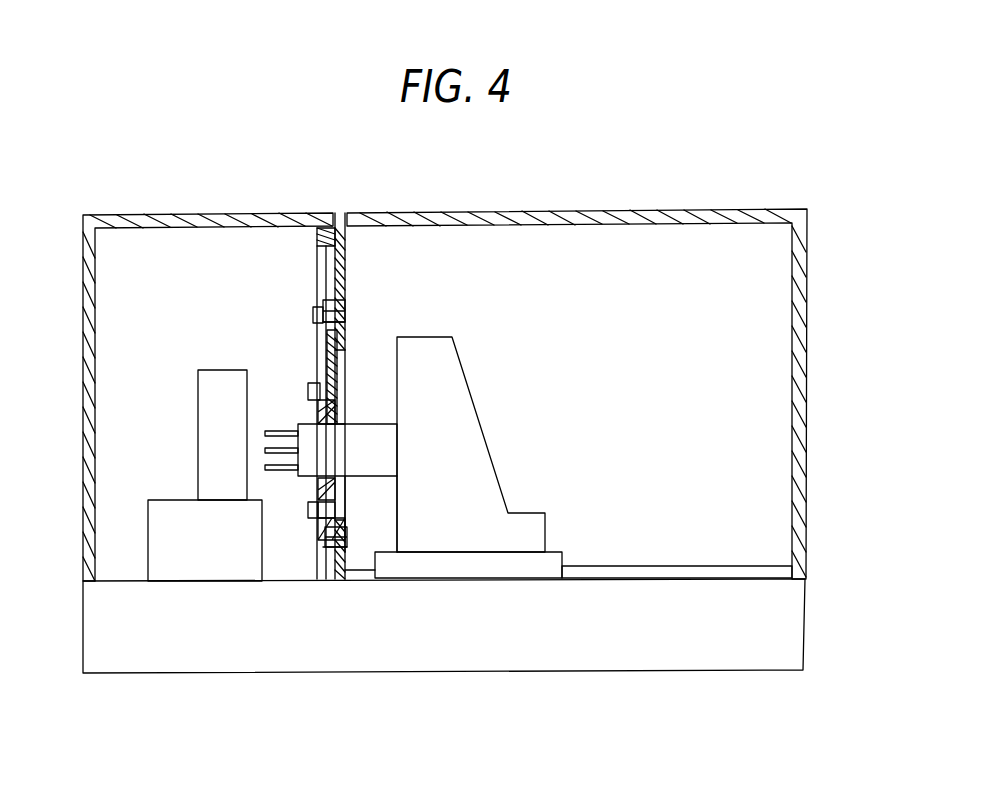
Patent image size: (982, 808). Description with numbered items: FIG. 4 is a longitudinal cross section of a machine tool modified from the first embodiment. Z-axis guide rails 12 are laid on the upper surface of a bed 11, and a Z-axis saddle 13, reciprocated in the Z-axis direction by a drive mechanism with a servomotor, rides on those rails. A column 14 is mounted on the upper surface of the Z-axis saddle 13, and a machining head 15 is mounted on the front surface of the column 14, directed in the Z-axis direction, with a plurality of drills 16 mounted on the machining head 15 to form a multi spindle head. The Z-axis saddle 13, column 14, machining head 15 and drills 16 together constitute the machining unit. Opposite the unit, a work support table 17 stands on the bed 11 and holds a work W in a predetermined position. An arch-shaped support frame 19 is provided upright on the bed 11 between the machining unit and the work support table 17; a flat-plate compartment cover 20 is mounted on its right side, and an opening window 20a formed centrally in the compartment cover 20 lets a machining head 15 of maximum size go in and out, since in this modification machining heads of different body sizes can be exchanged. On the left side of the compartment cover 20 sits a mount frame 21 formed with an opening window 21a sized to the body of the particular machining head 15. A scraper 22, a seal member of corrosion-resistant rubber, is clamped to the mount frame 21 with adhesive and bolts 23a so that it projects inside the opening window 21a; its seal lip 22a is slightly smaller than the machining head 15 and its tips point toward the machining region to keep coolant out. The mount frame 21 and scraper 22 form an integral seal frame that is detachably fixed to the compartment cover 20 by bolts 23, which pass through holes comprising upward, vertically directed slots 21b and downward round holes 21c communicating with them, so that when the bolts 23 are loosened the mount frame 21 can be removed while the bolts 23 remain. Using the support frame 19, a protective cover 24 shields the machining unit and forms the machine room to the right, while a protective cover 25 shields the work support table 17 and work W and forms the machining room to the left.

The bed 11 is at (127, 662).
The Z-axis guide rails 12 is at (638, 572).
The Z-axis saddle 13 is at (496, 572).
The column 14 is at (477, 420).
The machining head 15 is at (363, 477).
The drills 16 is at (265, 467).
The work support table 17 is at (205, 582).
The support frame 19 is at (317, 238).
The compartment cover 20 is at (345, 241).
The opening window 20a is at (345, 353).
The mount frame 21 is at (337, 301).
The opening window 21a is at (345, 418).
The slots 21b is at (348, 317).
The round holes 21c is at (345, 323).
The scraper 22 is at (315, 407).
The seal lip 22a is at (322, 478).
The bolts 23 is at (315, 312).
The bolts 23a is at (307, 390).
The protective cover 24 is at (400, 215).
The protective cover 25 is at (240, 214).
The work W is at (205, 410).